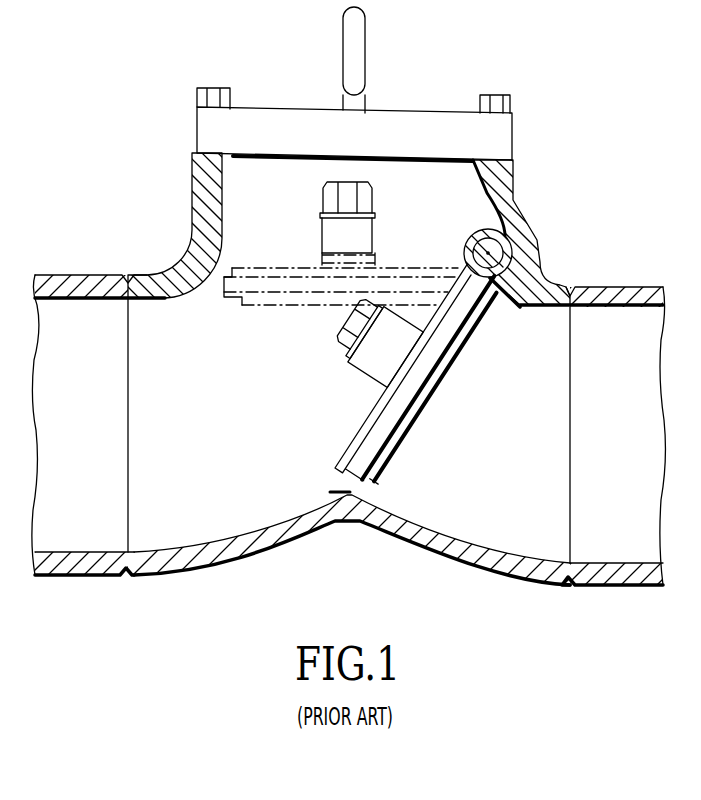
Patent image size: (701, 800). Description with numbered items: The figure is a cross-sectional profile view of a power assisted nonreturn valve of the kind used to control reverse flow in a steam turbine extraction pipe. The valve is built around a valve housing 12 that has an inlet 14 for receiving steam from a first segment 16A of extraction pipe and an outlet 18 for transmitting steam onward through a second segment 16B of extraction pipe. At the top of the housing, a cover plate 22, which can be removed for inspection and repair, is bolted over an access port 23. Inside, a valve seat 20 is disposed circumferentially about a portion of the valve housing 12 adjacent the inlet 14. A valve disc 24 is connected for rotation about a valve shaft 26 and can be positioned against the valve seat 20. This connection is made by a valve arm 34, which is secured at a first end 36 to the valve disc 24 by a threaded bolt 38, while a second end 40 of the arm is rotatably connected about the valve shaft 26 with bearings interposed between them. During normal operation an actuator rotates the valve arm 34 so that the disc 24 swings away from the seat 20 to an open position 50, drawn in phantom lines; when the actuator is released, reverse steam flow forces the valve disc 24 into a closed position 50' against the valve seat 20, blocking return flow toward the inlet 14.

The valve housing 12 is at (525, 218).
The inlet 14 is at (590, 378).
The first segment of extraction pipe 16A is at (612, 286).
The second segment of extraction pipe 16B is at (68, 274).
The outlet 18 is at (143, 337).
The valve seat 20 is at (352, 492).
The cover plate 22 is at (388, 113).
The access port 23 is at (263, 182).
The valve disc 24 is at (370, 428).
The valve shaft 26 is at (500, 257).
The valve arm 34 is at (432, 252).
The first end of valve arm 36 is at (352, 367).
The threaded bolt 38 is at (342, 332).
The second end of valve arm 40 is at (476, 232).
The open position 50 is at (328, 303).
The closed position 50' is at (396, 387).